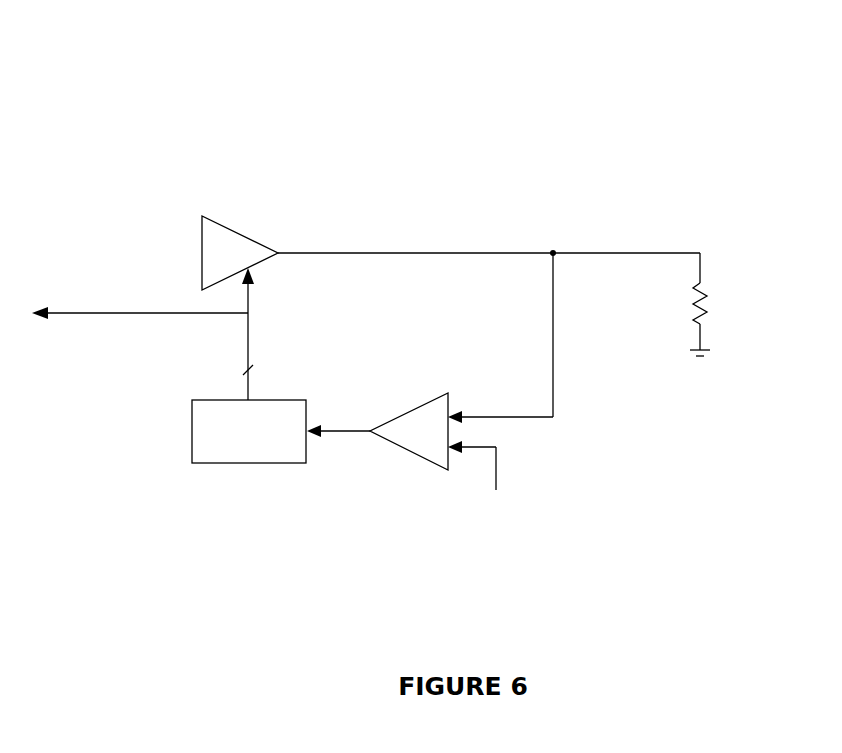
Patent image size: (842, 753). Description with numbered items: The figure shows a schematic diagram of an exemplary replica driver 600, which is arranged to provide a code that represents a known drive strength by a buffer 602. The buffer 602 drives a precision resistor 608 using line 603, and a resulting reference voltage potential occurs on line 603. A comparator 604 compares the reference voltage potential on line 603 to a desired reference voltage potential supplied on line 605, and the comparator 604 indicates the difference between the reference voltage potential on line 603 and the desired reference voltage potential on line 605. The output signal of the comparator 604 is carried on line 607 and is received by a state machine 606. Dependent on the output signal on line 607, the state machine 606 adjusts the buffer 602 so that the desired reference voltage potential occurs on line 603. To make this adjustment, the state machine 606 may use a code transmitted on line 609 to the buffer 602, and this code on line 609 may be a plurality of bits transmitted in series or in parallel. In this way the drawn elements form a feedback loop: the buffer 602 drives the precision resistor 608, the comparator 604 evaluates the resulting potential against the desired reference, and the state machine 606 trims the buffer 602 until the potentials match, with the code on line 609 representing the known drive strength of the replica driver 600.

The replica driver 600 is at (741, 91).
The buffer 602 is at (256, 234).
The line 603 is at (408, 251).
The comparator 604 is at (424, 404).
The line 605 is at (497, 475).
The state machine 606 is at (218, 400).
The line 607 is at (336, 428).
The precision resistor 608 is at (706, 284).
The line 609 is at (248, 342).